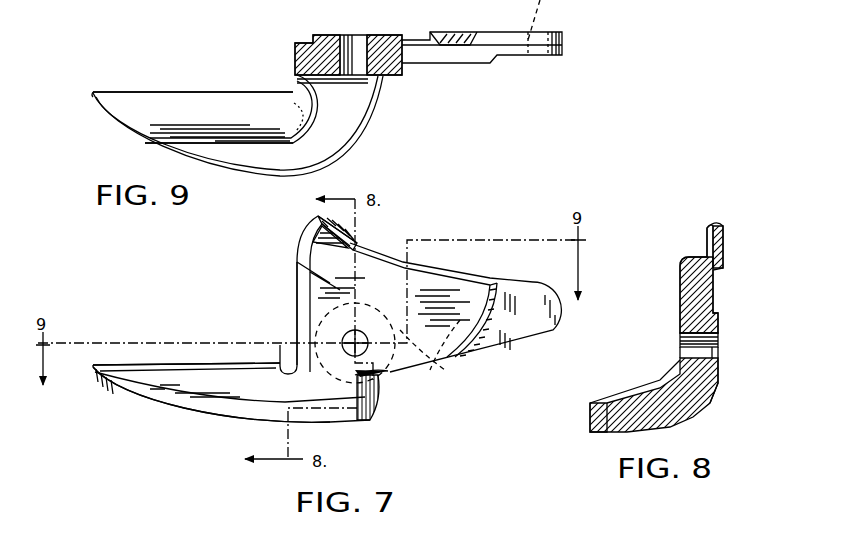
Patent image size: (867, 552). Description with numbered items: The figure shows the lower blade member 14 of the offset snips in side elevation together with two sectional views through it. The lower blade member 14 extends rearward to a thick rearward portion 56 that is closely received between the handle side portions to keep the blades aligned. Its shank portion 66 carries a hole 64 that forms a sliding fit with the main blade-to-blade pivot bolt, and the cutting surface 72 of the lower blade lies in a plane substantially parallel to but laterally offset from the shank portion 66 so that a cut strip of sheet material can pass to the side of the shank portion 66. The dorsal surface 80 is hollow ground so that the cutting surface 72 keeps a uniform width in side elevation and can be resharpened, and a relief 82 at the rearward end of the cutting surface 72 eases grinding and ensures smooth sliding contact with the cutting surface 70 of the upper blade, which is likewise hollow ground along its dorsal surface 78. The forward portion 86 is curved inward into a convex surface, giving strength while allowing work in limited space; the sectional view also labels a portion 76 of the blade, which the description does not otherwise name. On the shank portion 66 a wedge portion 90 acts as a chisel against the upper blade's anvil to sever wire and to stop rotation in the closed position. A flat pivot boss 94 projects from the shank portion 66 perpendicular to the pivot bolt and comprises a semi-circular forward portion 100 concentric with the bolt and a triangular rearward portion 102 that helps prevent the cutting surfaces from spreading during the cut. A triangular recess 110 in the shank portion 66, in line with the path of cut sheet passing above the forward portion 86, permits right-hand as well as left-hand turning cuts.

In FIG. 9, the lower blade member 14 is at (100, 113).
In FIG. 7, the lower blade member 14 is at (157, 408).
In FIG. 8, the lower blade member 14 is at (681, 238).
In FIG. 9, the rearward portion 56 is at (563, 43).
In FIG. 9, the hole 64 is at (363, 45).
In FIG. 7, the hole 64 is at (345, 336).
In FIG. 8, the hole 64 is at (680, 345).
In FIG. 9, the shank portion 66 is at (450, 78).
In FIG. 7, the shank portion 66 is at (313, 278).
In FIG. 8, the shank portion 66 is at (679, 285).
In FIG. 9, the cutting surface 70 is at (327, 0).
In FIG. 9, the cutting surface 72 is at (176, 92).
In FIG. 7, the cutting surface 72 is at (208, 361).
In FIG. 8, the cutting surface 72 is at (650, 368).
In FIG. 8, the heel portion 76 is at (680, 426).
In FIG. 9, the dorsal surface 78 is at (267, 5).
In FIG. 9, the dorsal surface 80 is at (220, 99).
In FIG. 9, the relief 82 is at (285, 92).
In FIG. 7, the relief 82 is at (287, 358).
In FIG. 9, the forward portion 86 is at (145, 136).
In FIG. 7, the forward portion 86 is at (195, 405).
In FIG. 8, the forward portion 86 is at (590, 414).
In FIG. 7, the wedge portion 90 is at (340, 230).
In FIG. 8, the wedge portion 90 is at (710, 227).
In FIG. 7, the blade-to-blade pivot boss 94 is at (370, 300).
In FIG. 8, the blade-to-blade pivot boss 94 is at (717, 388).
In FIG. 7, the semi-circular forward portion 100 is at (365, 423).
In FIG. 7, the triangular rearward portion 102 is at (437, 376).
In FIG. 7, the triangular recess 110 is at (390, 375).
In FIG. 8, the triangular recess 110 is at (672, 372).